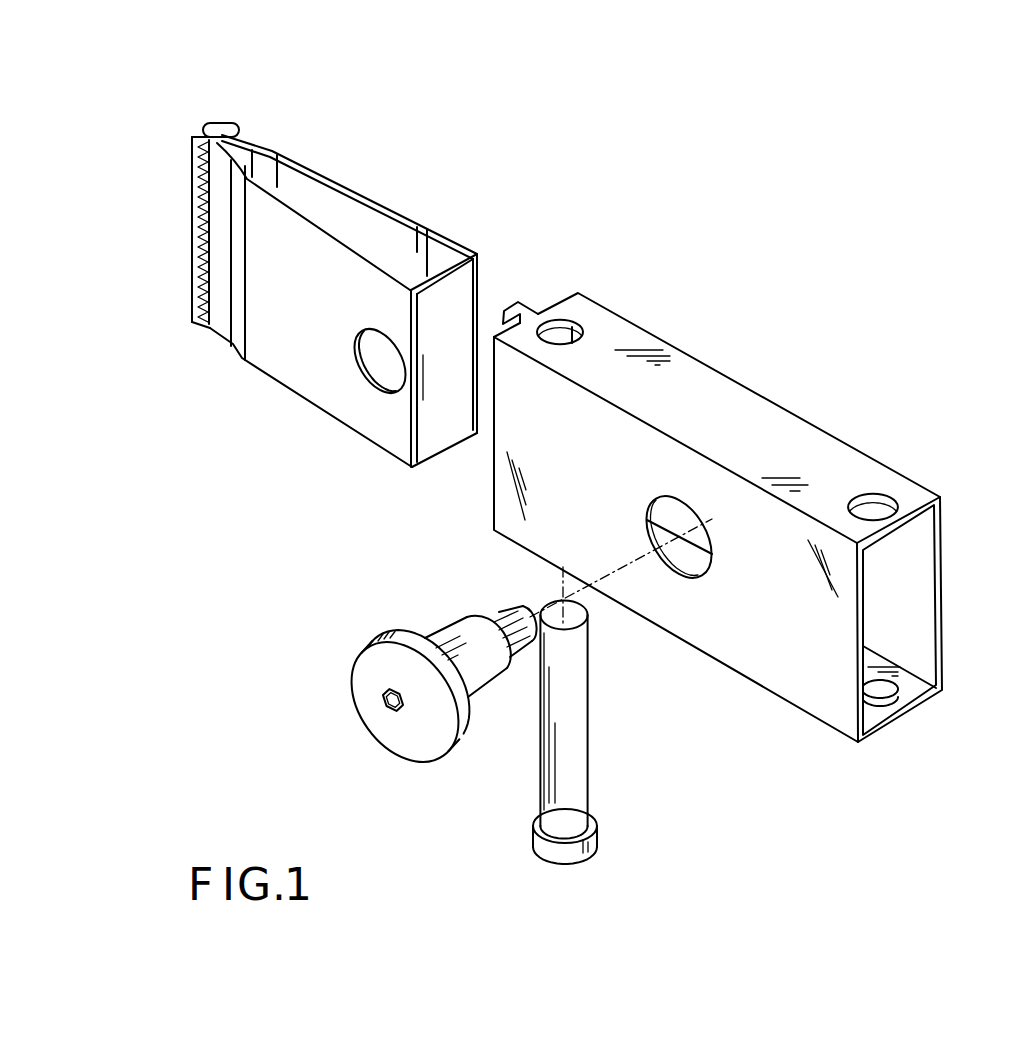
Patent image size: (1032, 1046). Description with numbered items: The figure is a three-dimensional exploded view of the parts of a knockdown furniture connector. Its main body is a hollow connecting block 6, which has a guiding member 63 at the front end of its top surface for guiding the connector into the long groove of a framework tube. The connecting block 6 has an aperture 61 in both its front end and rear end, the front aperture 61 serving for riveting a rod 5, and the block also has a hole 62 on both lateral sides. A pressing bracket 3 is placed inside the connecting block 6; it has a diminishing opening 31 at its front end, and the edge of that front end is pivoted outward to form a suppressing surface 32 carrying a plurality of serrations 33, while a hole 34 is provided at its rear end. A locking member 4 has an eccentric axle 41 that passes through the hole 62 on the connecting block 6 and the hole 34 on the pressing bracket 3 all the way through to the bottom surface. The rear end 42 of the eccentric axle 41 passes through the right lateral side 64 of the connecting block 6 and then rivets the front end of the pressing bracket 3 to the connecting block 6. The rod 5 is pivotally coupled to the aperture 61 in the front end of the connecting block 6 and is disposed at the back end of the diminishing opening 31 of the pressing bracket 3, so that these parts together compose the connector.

The pressing bracket 3 is at (303, 403).
The diminishing opening 31 is at (267, 143).
The suppressing surface 32 is at (212, 124).
The serrations 33 is at (207, 328).
The hole 34 is at (378, 392).
The locking member 4 is at (372, 730).
The eccentric axle 41 is at (477, 673).
The rear end 42 is at (523, 610).
The rod 5 is at (575, 755).
The connecting block 6 is at (787, 433).
The aperture 61 is at (893, 507).
The hole 62 is at (682, 575).
The guiding member 63 is at (517, 308).
The right lateral side 64 is at (813, 693).